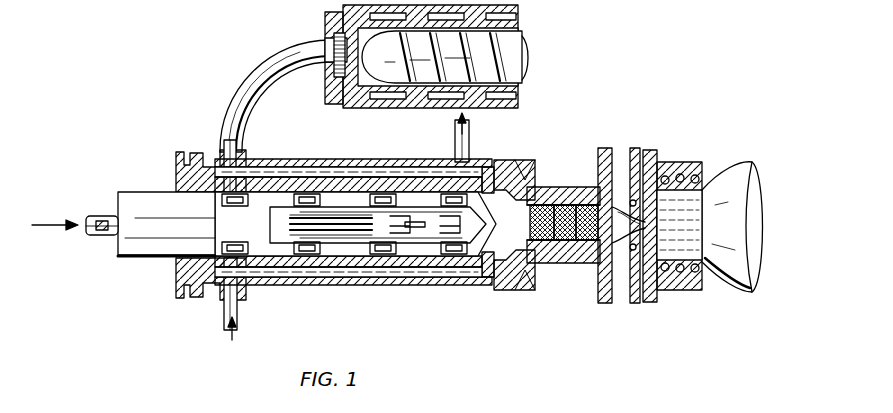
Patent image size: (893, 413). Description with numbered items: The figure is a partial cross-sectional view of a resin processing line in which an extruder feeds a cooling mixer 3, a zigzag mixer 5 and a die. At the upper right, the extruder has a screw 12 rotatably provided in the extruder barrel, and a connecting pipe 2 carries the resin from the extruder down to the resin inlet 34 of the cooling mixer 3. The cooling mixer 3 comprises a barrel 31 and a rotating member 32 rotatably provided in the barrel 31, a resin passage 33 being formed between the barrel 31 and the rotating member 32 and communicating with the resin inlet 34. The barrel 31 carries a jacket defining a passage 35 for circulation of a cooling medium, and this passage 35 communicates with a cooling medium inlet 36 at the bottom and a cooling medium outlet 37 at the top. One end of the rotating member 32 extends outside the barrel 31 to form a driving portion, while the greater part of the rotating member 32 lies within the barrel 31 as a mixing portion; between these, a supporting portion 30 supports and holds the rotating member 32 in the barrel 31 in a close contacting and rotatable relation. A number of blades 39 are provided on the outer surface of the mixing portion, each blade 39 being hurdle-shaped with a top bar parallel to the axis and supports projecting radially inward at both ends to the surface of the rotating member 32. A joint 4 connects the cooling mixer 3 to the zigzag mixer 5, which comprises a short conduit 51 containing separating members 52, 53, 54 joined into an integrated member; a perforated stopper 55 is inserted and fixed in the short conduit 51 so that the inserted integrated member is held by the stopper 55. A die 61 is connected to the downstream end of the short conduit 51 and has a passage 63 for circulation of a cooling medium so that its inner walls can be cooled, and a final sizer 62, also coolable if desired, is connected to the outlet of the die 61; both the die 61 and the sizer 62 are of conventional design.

The connecting pipe 2 is at (262, 60).
The screw 12 is at (523, 55).
The resin inlet 34 is at (222, 162).
The resin passage 33 is at (262, 198).
The supporting portion 30 is at (98, 215).
The barrel 31 is at (373, 168).
The cooling medium outlet 37 is at (474, 138).
The cooling medium inlet 36 is at (218, 303).
The cooling mixer 3 is at (308, 292).
The passage 35 is at (374, 272).
The blades 39 is at (411, 237).
The rotating member 32 is at (143, 245).
The joint 4 is at (500, 180).
The zigzag mixer 5 is at (552, 178).
The short conduit 51 is at (573, 190).
The separating member 52 is at (547, 243).
The separating member 53 is at (563, 241).
The separating member 54 is at (593, 238).
The perforated stopper 55 is at (604, 158).
The die 61 is at (630, 200).
The passage 63 is at (656, 178).
The final sizer 62 is at (683, 173).